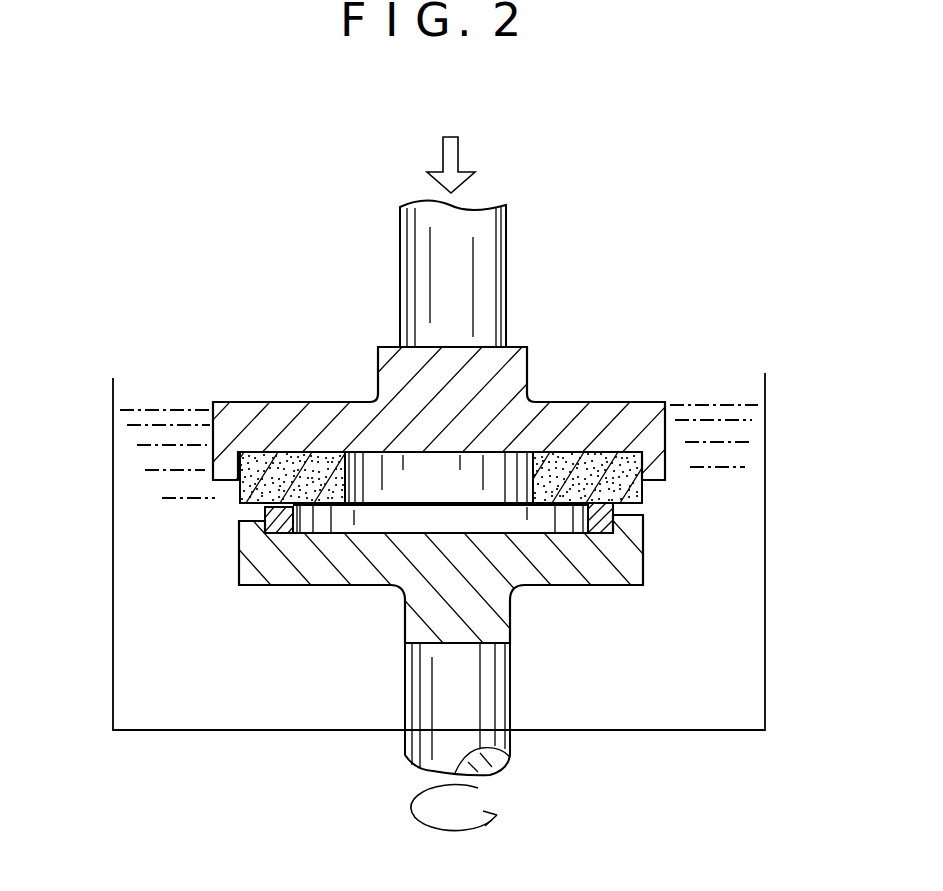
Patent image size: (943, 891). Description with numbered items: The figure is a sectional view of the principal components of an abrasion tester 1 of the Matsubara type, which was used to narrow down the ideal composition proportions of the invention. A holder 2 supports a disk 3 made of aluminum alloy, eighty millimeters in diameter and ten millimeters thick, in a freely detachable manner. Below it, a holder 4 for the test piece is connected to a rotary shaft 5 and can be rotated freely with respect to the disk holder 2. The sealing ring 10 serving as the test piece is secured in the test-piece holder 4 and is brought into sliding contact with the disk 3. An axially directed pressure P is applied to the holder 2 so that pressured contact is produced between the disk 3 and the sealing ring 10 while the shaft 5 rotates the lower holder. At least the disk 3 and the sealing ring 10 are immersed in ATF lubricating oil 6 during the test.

The abrasion tester 1 is at (698, 242).
The holder 2 is at (607, 418).
The disk 3 is at (640, 493).
The holder for a test piece 4 is at (640, 563).
The rotary shaft 5 is at (513, 704).
The ATF lubricating oil 6 is at (768, 682).
The sealing ring 10 is at (265, 508).